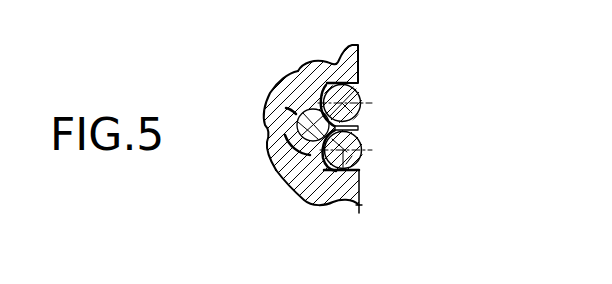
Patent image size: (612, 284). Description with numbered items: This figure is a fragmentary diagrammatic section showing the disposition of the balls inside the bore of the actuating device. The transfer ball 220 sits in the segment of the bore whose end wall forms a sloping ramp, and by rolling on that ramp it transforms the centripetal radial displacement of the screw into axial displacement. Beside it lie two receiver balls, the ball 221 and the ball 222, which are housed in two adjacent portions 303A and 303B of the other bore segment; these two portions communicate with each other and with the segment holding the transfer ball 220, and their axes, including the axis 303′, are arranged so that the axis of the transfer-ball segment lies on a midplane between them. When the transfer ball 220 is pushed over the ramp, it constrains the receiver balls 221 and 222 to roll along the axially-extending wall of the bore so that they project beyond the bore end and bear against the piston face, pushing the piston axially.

The receiver ball 222 is at (337, 63).
The transfer ball 220 is at (287, 110).
The receiver ball 221 is at (337, 192).
The portion of the bore segment 303B is at (358, 121).
The axis of portion 303A 303′ is at (390, 147).
The portion of the bore segment 303A is at (360, 163).